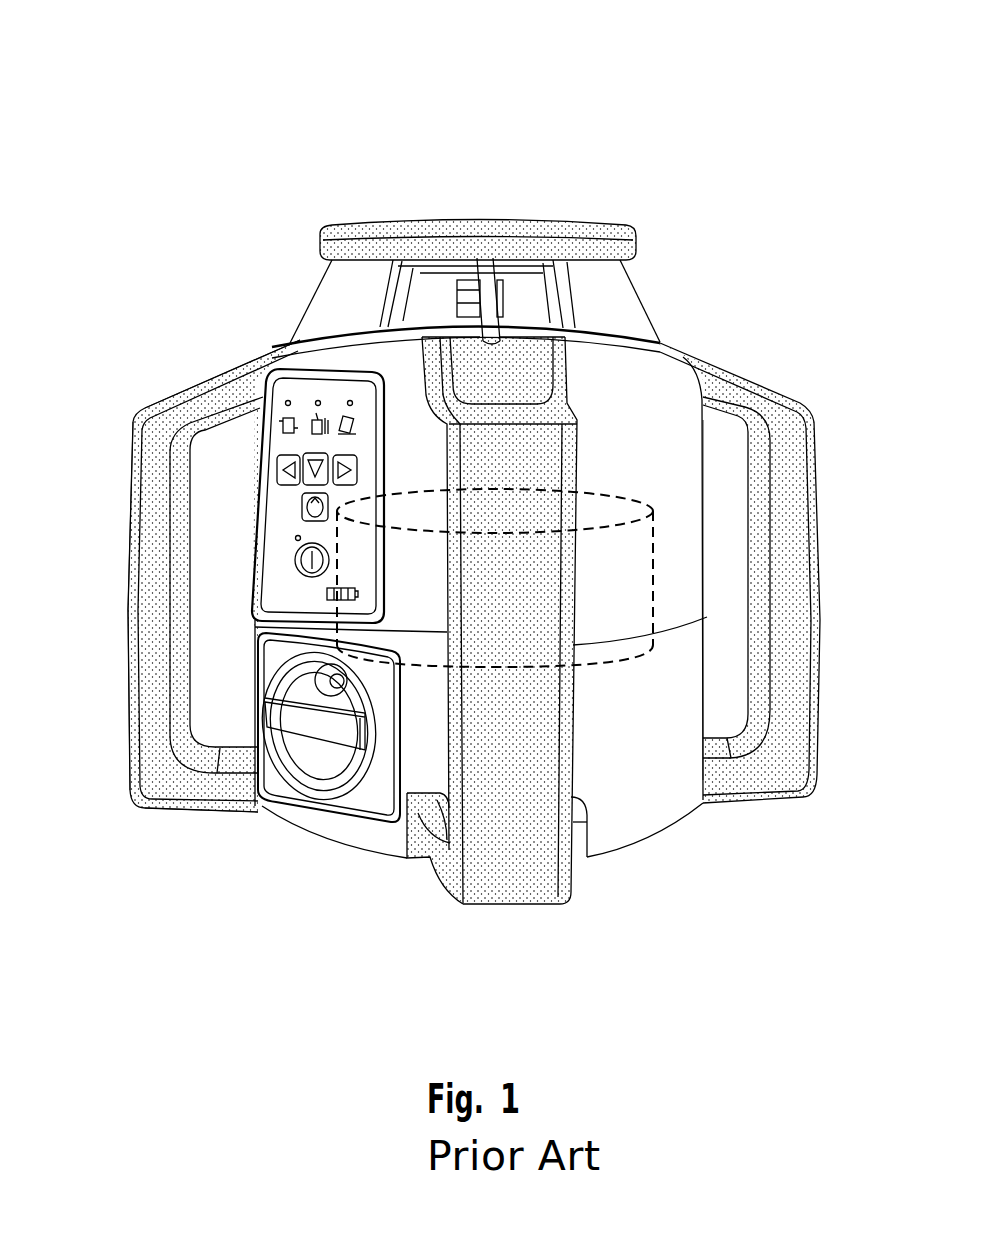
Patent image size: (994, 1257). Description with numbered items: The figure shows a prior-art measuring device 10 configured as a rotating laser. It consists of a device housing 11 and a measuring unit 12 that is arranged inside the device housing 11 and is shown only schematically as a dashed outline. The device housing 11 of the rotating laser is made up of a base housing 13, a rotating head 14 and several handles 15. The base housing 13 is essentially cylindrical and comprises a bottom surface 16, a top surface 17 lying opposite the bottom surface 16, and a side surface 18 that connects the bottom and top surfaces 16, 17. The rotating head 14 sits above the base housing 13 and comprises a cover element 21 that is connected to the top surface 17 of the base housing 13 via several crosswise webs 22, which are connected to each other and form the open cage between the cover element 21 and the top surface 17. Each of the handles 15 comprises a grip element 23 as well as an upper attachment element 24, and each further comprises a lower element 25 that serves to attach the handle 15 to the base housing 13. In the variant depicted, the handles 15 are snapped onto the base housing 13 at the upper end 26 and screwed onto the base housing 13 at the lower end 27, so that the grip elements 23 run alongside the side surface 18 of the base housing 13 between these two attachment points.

The measuring device 10 is at (340, 108).
The device housing 11 is at (674, 443).
The measuring unit 12 is at (612, 658).
The base housing 13 is at (665, 808).
The rotating head 14 is at (500, 208).
The handles 15 is at (128, 456).
The bottom surface 16 is at (325, 848).
The top surface 17 is at (428, 320).
The side surface 18 is at (712, 533).
The cover element 21 is at (579, 223).
The crosswise webs 22 is at (613, 305).
The grip element 23 is at (152, 628).
The upper attachment element 24 is at (298, 344).
The lower element 25 is at (264, 801).
The upper end 26 is at (188, 371).
The lower end 27 is at (168, 836).